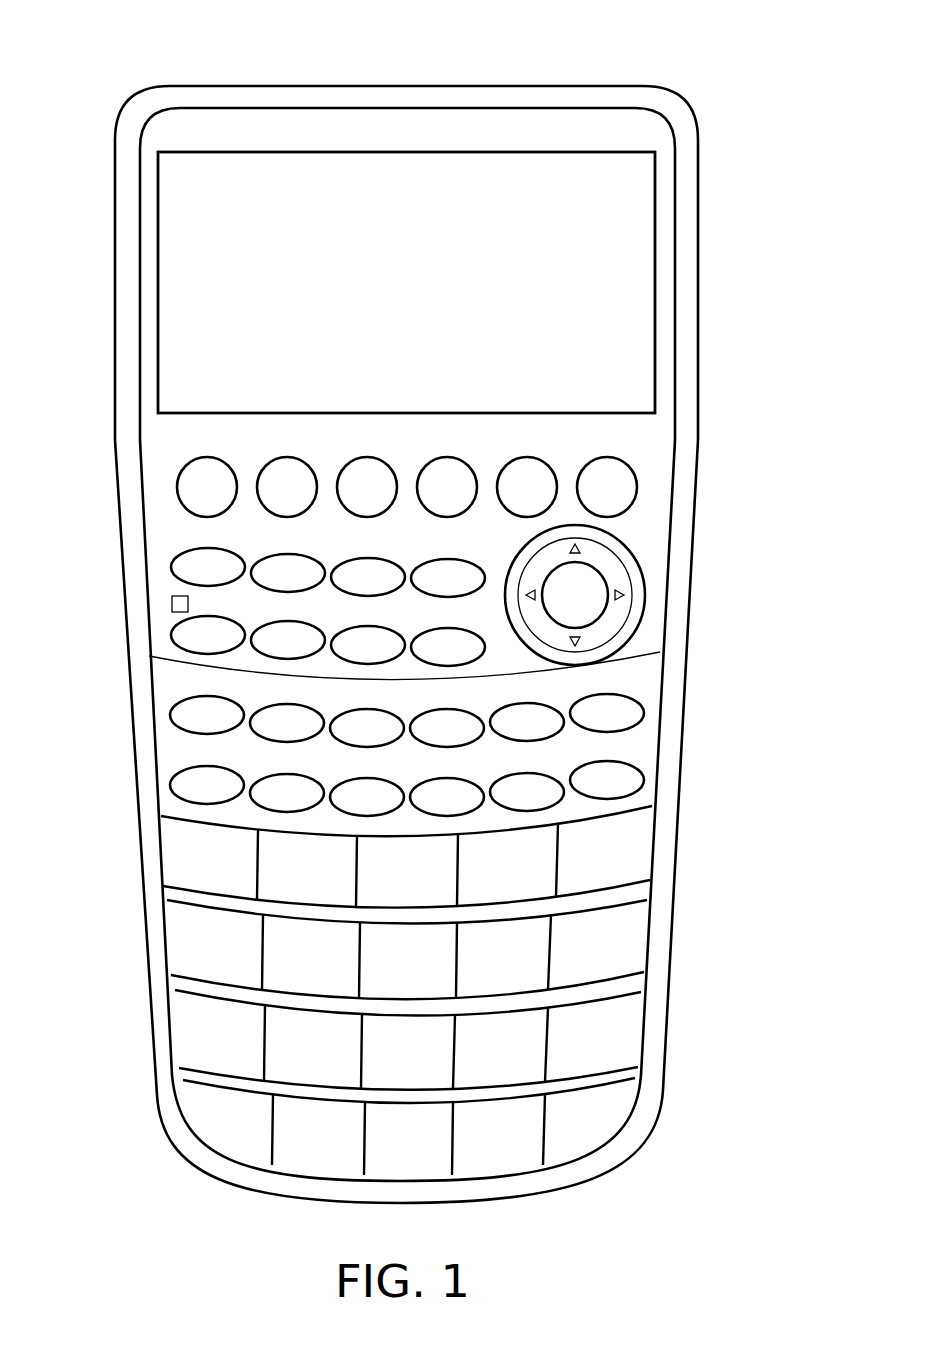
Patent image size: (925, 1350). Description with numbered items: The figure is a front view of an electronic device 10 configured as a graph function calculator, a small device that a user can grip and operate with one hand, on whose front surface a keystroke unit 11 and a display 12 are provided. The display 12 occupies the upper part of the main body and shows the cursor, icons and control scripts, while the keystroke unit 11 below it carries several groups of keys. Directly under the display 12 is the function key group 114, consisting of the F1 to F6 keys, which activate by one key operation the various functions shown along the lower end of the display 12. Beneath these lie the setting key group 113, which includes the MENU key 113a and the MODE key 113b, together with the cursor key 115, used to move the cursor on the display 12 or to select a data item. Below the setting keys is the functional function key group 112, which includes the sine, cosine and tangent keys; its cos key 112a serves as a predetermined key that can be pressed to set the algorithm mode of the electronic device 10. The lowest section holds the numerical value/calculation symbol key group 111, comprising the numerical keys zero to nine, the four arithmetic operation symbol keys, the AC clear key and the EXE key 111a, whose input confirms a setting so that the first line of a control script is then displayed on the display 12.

The electronic device 10 is at (540, 82).
The keystroke unit 11 is at (773, 445).
The display 12 is at (656, 290).
The numerical value/calculation symbol key group 111 is at (705, 800).
The EXE key 111a is at (612, 1128).
The functional function key group 112 is at (705, 605).
The cos key 112a is at (500, 706).
The setting key group 113 is at (705, 535).
The MENU key 113a is at (416, 566).
The MODE key 113b is at (276, 556).
The function key group 114 is at (705, 445).
The cursor key 115 is at (604, 568).